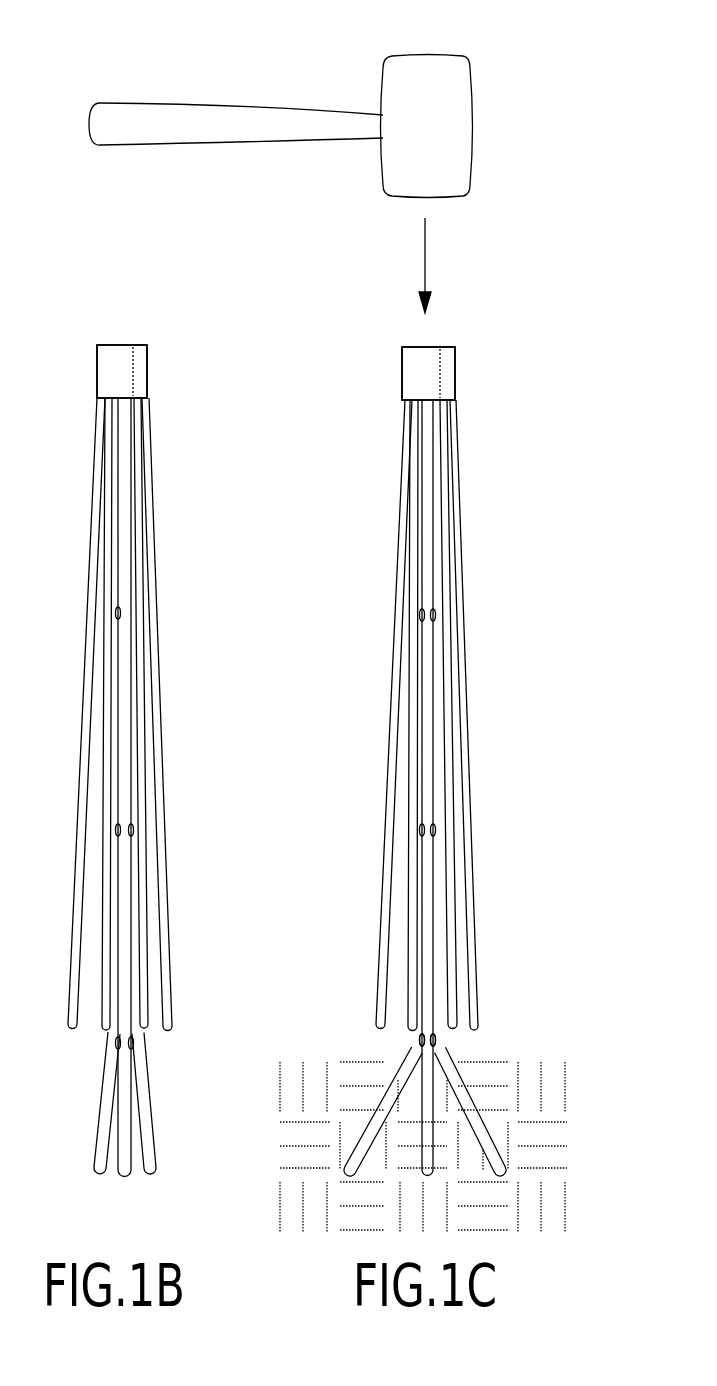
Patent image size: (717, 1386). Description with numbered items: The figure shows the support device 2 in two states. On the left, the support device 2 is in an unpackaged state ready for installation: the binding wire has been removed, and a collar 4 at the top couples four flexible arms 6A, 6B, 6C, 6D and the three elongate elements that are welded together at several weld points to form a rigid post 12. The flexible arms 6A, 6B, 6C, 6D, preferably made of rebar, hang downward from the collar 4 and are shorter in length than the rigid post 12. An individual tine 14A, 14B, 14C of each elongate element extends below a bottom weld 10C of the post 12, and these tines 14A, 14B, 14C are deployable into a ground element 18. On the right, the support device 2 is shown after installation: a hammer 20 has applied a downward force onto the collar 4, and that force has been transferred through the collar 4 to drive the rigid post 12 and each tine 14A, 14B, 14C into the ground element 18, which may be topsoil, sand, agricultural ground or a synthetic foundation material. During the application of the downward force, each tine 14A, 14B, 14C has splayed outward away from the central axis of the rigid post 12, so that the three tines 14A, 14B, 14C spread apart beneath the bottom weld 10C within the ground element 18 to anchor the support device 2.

In FIG. 1B, the support device 2 is at (85, 313).
In FIG. 1C, the support device 2 is at (507, 363).
In FIG. 1B, the collar 4 is at (93, 370).
In FIG. 1C, the collar 4 is at (400, 372).
In FIG. 1B, the flexible arm 6A is at (79, 812).
In FIG. 1C, the flexible arm 6A is at (394, 714).
In FIG. 1B, the flexible arm 6B is at (107, 714).
In FIG. 1C, the flexible arm 6B is at (408, 890).
In FIG. 1B, the flexible arm 6C is at (141, 713).
In FIG. 1C, the flexible arm 6C is at (455, 895).
In FIG. 1B, the flexible arm 6D is at (161, 776).
In FIG. 1C, the flexible arm 6D is at (464, 715).
In FIG. 1C, the bottom weld 10C is at (408, 1050).
In FIG. 1B, the rigid post 12 is at (200, 593).
In FIG. 1C, the rigid post 12 is at (535, 744).
In FIG. 1B, the tine 14A is at (100, 1105).
In FIG. 1C, the tine 14A is at (383, 1111).
In FIG. 1B, the tine 14B is at (122, 1155).
In FIG. 1C, the tine 14B is at (428, 788).
In FIG. 1B, the tine 14C is at (152, 1112).
In FIG. 1C, the tine 14C is at (470, 1111).
In FIG. 1C, the ground element 18 is at (500, 1052).
In FIG. 1C, the hammer 20 is at (472, 127).